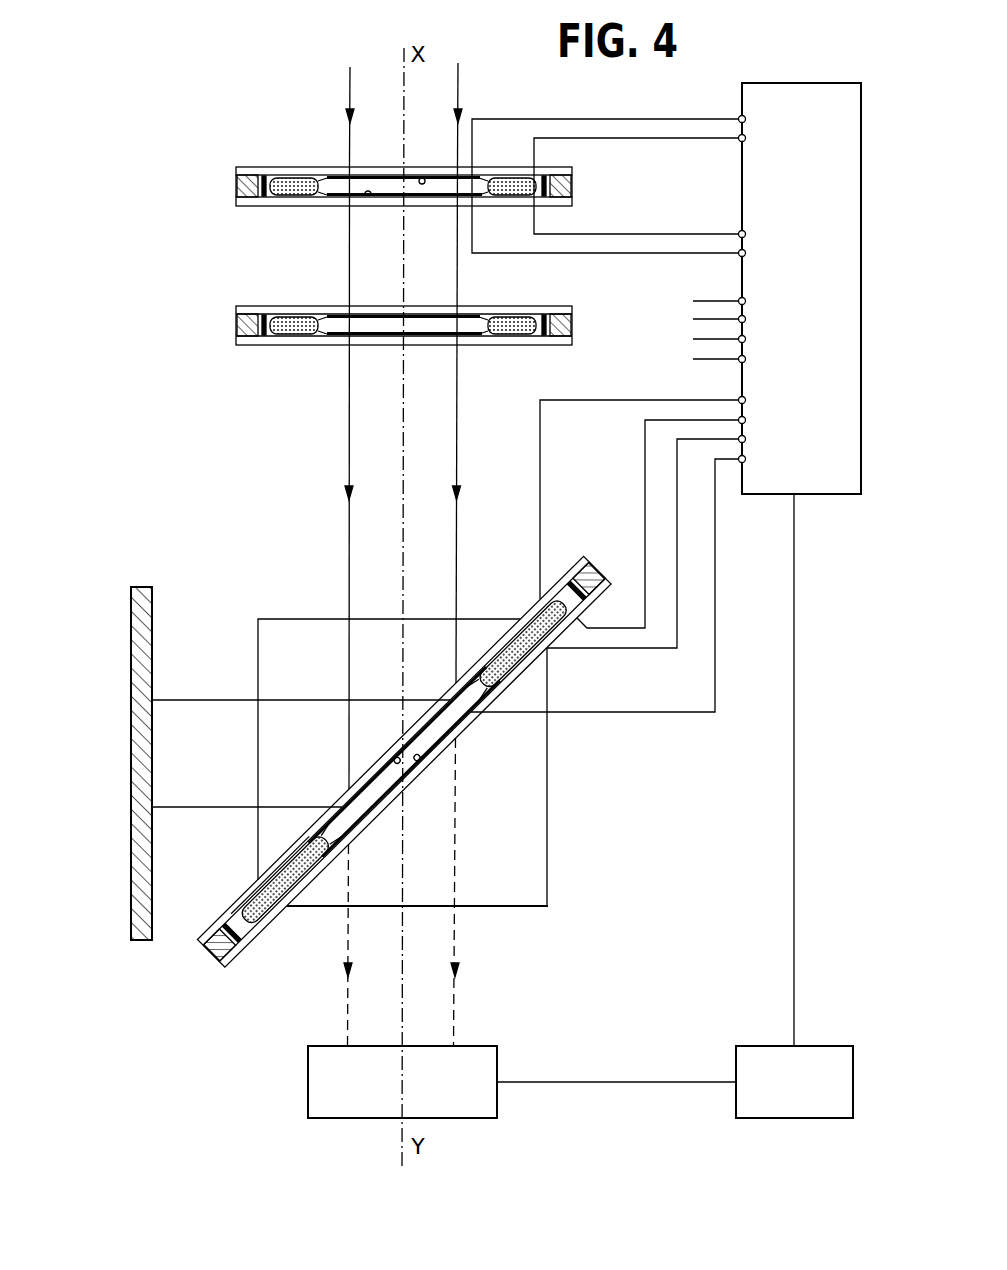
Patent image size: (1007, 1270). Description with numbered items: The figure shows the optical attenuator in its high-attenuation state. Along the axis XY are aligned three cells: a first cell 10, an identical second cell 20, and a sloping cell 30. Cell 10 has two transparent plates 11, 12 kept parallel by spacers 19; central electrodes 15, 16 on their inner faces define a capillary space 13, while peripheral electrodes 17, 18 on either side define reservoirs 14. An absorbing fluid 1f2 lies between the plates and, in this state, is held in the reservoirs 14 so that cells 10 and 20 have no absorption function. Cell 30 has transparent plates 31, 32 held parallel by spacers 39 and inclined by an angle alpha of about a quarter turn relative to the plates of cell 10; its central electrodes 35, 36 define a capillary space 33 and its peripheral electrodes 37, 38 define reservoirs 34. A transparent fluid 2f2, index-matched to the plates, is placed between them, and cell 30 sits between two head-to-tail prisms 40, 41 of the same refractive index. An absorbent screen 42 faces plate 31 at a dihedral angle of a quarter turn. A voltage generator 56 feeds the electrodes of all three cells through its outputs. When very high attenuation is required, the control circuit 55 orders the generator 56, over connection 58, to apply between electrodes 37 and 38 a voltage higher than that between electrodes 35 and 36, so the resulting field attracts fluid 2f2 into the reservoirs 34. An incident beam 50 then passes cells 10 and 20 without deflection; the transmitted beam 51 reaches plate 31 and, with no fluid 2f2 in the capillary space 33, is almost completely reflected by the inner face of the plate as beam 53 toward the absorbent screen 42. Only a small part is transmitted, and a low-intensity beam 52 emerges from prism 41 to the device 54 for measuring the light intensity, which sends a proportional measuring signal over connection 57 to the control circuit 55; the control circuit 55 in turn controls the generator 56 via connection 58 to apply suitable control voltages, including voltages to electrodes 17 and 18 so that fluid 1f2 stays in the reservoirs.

The cell 10 is at (427, 194).
The transparent plate 11 is at (243, 167).
The transparent plate 12 is at (243, 206).
The capillary space 13 is at (392, 186).
The reservoir 14 is at (265, 205).
The central electrode 15 is at (421, 178).
The central electrode 16 is at (366, 206).
The electrode 17 is at (290, 175).
The electrode 18 is at (312, 200).
The spacer 19 is at (238, 190).
The fluid 1f2 is at (311, 177).
The cell 20 is at (603, 298).
The cell 30 is at (421, 744).
The transparent plate 31 is at (588, 568).
The transparent plate 32 is at (596, 591).
The capillary space 33 is at (352, 822).
The reservoir 34 is at (548, 588).
The central electrode 35 is at (391, 754).
The central electrode 36 is at (416, 762).
The peripheral electrode 37 is at (530, 612).
The peripheral electrode 38 is at (566, 628).
The spacer 39 is at (600, 580).
The fluid 2f2 is at (301, 858).
The prism 40 is at (300, 619).
The prism 41 is at (510, 908).
The absorbent screen 42 is at (153, 600).
The beam 50 is at (376, 100).
The beam 51 is at (356, 412).
The beam 52 is at (370, 1004).
The beam 53 is at (230, 716).
The device for measuring the light intensity 54 is at (309, 1095).
The control circuit 55 is at (853, 1098).
The voltage generator 56 is at (820, 508).
The connection 57 is at (586, 1082).
The connection 58 is at (797, 940).